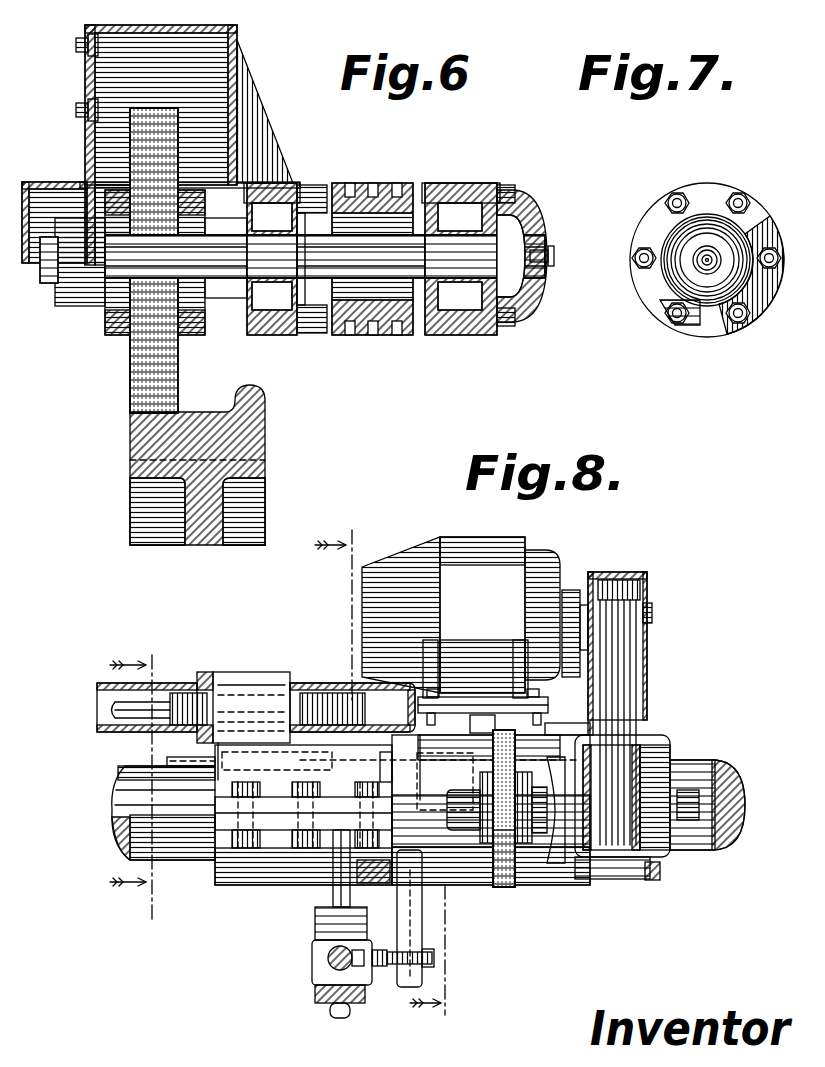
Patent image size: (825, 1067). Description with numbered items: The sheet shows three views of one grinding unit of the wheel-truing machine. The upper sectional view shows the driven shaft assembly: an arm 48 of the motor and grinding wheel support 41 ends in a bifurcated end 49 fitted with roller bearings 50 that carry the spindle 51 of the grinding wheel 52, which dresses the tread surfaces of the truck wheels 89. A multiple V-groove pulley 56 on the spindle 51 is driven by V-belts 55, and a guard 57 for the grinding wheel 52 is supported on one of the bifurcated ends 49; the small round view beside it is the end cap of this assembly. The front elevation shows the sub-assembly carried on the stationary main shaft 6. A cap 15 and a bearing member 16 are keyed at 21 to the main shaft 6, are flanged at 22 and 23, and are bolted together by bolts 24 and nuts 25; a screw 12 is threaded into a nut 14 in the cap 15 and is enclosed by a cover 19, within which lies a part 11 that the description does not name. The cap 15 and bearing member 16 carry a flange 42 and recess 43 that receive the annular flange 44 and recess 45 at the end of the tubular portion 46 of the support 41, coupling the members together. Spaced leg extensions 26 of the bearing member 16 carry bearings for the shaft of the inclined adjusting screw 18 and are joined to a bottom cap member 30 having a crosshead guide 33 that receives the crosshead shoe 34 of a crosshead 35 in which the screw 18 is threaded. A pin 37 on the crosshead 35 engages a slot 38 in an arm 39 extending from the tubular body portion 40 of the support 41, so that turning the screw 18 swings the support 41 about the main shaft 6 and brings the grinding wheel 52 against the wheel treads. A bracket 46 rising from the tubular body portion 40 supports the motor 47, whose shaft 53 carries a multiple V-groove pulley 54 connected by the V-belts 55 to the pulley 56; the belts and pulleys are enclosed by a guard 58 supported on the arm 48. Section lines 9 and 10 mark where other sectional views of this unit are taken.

In FIG. 6, the guard 57 is at (232, 42).
In FIG. 6, the roller bearings 50 is at (285, 210).
In FIG. 6, the V-belts 55 is at (402, 190).
In FIG. 8, the V-belts 55 is at (600, 703).
In FIG. 6, the spindle 51 is at (228, 296).
In FIG. 6, the bifurcated end 49 is at (275, 336).
In FIG. 8, the bifurcated end 49 is at (652, 856).
In FIG. 6, the multiple V-groove pulley 56 is at (388, 336).
In FIG. 8, the multiple V-groove pulley 56 is at (640, 785).
In FIG. 6, the grinding wheel 52 is at (130, 362).
In FIG. 8, the grinding wheel 52 is at (510, 866).
In FIG. 6, the wheels 89 is at (198, 546).
In FIG. 8, the stationary main shaft 6 is at (120, 793).
In FIG. 8, the section line 9 is at (135, 772).
In FIG. 8, the section line 10 is at (390, 775).
In FIG. 8, the rod 11 is at (112, 708).
In FIG. 8, the screw 12 is at (328, 688).
In FIG. 8, the nut 14 is at (248, 690).
In FIG. 8, the cap 15 is at (227, 775).
In FIG. 8, the bearing member 16 is at (294, 835).
In FIG. 8, the screw 18 is at (328, 958).
In FIG. 8, the cover 19 is at (230, 670).
In FIG. 8, the key 21 is at (167, 760).
In FIG. 8, the flange 22 is at (382, 828).
In FIG. 8, the flange 23 is at (220, 823).
In FIG. 8, the bolts 24 is at (305, 804).
In FIG. 8, the nuts 25 is at (320, 893).
In FIG. 8, the leg extensions 26 is at (315, 914).
In FIG. 8, the bottom cap member 30 is at (357, 1002).
In FIG. 8, the crosshead guide 33 is at (336, 1018).
In FIG. 8, the crosshead shoe 34 is at (323, 997).
In FIG. 8, the crosshead 35 is at (309, 978).
In FIG. 8, the pin 37 is at (435, 965).
In FIG. 8, the slot 38 is at (423, 982).
In FIG. 8, the arm 39 is at (430, 985).
In FIG. 8, the tubular body portion 40 is at (572, 882).
In FIG. 8, the motor and grinding wheel support 41 is at (540, 730).
In FIG. 8, the flange 42 is at (380, 753).
In FIG. 8, the recess 43 is at (291, 709).
In FIG. 8, the annular flange 44 is at (378, 888).
In FIG. 8, the recess 45 is at (398, 862).
In FIG. 8, the bracket 46 is at (487, 700).
In FIG. 8, the motor 47 is at (475, 600).
In FIG. 8, the arm 48 is at (650, 816).
In FIG. 8, the motor shaft 53 is at (654, 610).
In FIG. 8, the multiple V-groove pulley 54 is at (640, 592).
In FIG. 8, the guard 58 is at (654, 628).